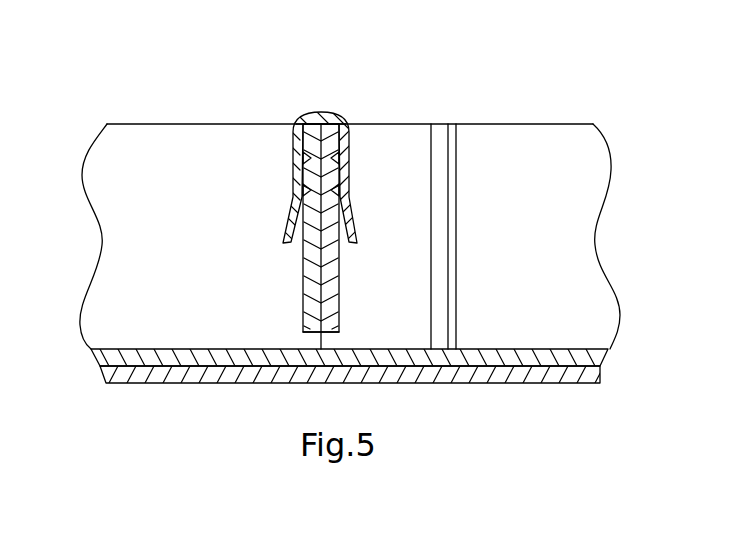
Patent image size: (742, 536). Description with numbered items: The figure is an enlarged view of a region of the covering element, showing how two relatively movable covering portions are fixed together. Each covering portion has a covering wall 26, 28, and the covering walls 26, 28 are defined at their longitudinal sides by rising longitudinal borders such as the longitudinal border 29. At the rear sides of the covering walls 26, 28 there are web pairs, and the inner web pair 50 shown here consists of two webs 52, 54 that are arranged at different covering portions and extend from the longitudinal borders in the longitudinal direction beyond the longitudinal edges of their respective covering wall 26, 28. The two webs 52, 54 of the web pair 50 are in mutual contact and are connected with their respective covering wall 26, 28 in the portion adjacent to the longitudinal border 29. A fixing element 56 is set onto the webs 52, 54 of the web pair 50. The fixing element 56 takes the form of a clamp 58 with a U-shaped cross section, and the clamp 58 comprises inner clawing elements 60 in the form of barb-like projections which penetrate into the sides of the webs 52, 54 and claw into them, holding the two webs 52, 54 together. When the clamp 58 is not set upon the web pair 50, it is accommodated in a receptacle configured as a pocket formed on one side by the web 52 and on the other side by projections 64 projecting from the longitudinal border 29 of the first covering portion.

The covering wall 26 is at (583, 349).
The covering wall 28 is at (575, 383).
The longitudinal border 29 is at (557, 155).
The inner web pair 50 is at (283, 272).
The web 52 is at (338, 290).
The web 54 is at (303, 292).
The fixing element 56 is at (240, 161).
The clamp 58 is at (322, 112).
The inner clawing elements 60 is at (293, 160).
The projections 64 is at (440, 146).